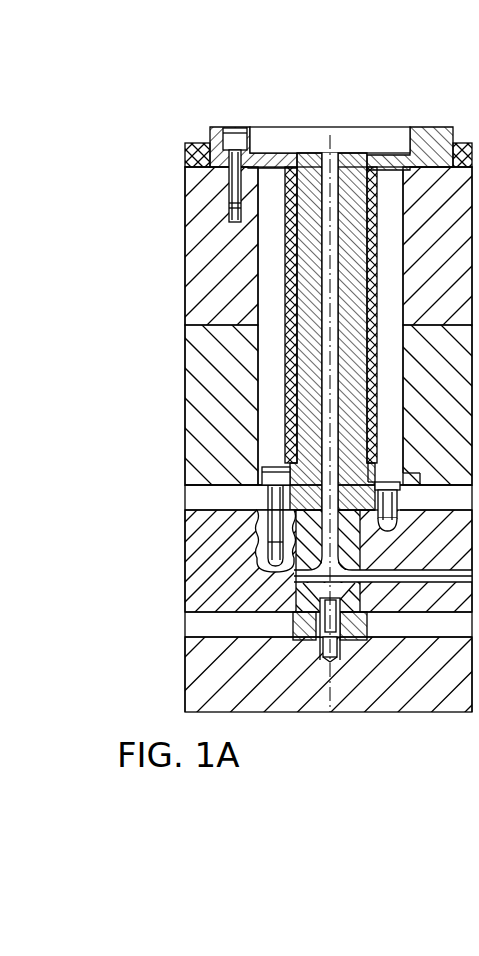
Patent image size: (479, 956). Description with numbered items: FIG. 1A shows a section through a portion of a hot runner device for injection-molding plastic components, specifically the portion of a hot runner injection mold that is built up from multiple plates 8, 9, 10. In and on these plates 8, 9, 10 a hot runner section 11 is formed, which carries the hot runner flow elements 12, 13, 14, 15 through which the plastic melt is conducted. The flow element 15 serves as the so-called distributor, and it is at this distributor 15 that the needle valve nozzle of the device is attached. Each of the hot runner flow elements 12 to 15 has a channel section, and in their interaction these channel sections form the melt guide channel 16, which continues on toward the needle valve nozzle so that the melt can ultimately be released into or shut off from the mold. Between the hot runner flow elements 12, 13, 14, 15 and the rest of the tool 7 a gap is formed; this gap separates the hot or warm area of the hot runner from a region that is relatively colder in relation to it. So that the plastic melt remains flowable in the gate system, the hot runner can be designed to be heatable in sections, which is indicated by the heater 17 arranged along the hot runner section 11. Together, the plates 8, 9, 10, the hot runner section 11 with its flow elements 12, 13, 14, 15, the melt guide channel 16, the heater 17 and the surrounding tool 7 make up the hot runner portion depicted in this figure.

The tool 7 is at (181, 417).
The plate 8 is at (180, 207).
The plate 9 is at (217, 417).
The plate 10 is at (180, 677).
The hot runner section 11 is at (366, 143).
The hot runner flow element 12 is at (285, 265).
The hot runner flow element 13 is at (308, 640).
The hot runner flow element 14 is at (435, 603).
The distributor flow element 15 is at (476, 632).
The melt guide channel 16 is at (393, 578).
The heater 17 is at (375, 263).